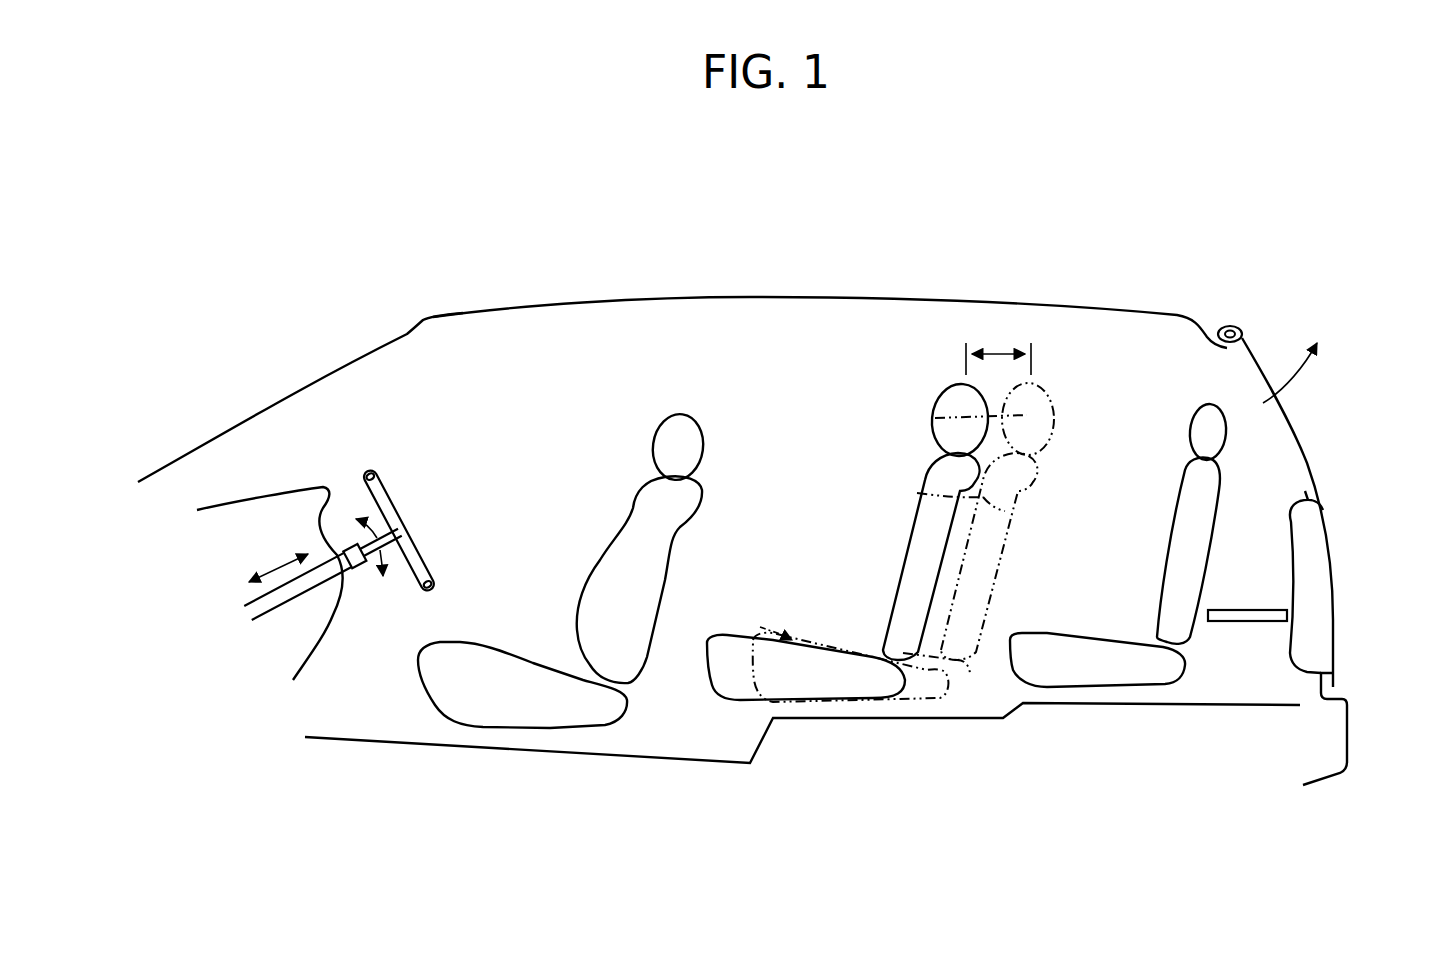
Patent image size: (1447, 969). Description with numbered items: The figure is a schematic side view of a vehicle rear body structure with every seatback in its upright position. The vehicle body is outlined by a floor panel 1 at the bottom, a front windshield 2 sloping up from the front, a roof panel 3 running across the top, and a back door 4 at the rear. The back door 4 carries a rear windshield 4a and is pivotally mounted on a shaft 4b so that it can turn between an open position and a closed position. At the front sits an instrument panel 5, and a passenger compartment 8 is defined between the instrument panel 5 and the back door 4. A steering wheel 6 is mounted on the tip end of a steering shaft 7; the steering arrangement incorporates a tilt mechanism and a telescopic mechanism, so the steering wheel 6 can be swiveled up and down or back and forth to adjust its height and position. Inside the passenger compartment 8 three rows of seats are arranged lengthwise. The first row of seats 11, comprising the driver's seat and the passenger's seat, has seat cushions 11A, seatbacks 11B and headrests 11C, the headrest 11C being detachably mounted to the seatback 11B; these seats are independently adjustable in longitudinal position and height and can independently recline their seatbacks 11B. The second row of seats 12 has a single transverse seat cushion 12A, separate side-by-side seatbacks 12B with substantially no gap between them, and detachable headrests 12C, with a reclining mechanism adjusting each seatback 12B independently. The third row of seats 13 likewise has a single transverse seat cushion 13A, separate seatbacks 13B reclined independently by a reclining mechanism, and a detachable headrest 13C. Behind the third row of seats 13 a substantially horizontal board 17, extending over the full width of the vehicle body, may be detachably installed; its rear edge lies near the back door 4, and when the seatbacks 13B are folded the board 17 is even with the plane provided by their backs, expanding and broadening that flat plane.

The floor panel 1 is at (669, 752).
The front windshield 2 is at (313, 378).
The roof panel 3 is at (747, 297).
The back door 4 is at (1333, 561).
The rear windshield 4a is at (1318, 473).
The shaft 4b is at (1233, 327).
The instrument panel 5 is at (287, 488).
The steering wheel 6 is at (393, 493).
The steering shaft 7 is at (277, 597).
The passenger compartment 8 is at (773, 425).
The first row of seats 11 is at (562, 607).
The seat cushion 11A is at (490, 710).
The seatback 11B is at (647, 537).
The headrest 11C is at (670, 452).
The second row of seats 12 is at (880, 522).
The seat cushion 12A is at (755, 663).
The seatback 12B is at (940, 497).
The headrest 12C is at (953, 407).
The third row of seats 13 is at (1143, 578).
The seat cushion 13A is at (1110, 673).
The seatback 13B is at (1198, 558).
The headrest 13C is at (1207, 437).
The horizontal board 17 is at (1250, 615).